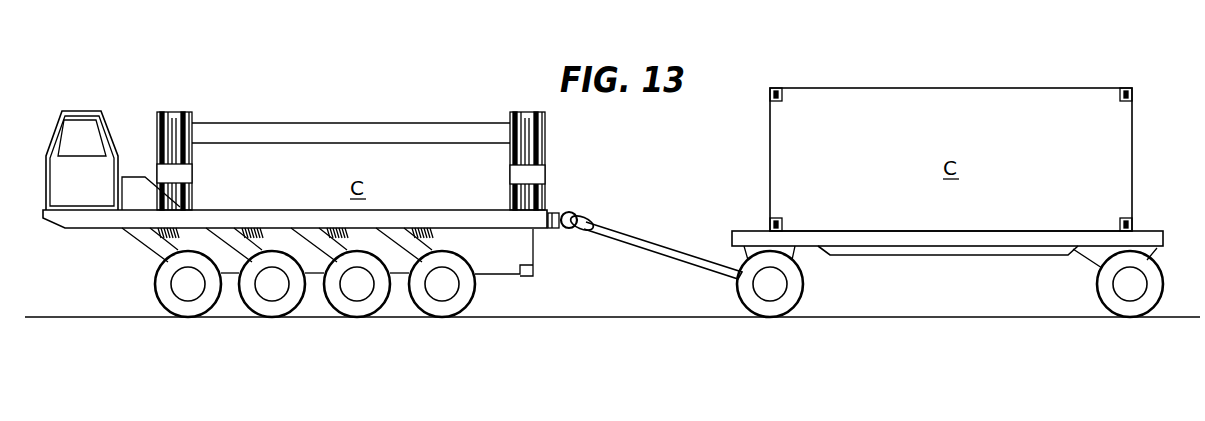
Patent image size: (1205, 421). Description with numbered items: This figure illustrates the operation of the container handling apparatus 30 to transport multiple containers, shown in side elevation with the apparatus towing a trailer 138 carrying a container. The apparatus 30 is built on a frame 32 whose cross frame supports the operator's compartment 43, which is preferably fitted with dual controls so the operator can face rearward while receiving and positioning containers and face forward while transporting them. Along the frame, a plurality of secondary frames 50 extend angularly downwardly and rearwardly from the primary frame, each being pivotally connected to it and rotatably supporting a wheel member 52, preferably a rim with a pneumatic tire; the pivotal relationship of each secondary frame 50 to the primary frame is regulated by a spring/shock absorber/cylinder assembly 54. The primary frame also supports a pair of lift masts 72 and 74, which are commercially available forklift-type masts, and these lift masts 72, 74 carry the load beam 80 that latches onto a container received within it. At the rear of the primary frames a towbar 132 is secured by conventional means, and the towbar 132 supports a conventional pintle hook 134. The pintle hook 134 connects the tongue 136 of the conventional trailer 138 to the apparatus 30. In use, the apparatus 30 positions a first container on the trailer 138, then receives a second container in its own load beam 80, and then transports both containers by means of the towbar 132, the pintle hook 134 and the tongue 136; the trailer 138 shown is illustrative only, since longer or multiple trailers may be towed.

The container handling apparatus 30 is at (82, 88).
The frame 32 is at (77, 234).
The operator's compartment 43 is at (114, 108).
The secondary frame 50 is at (388, 232).
The wheel member 52 is at (258, 302).
The spring/shock absorber/cylinder assembly 54 is at (330, 228).
The lift mast 72 is at (192, 112).
The lift mast 74 is at (508, 113).
The load beam 80 is at (360, 120).
The towbar 132 is at (551, 230).
The pintle hook 134 is at (567, 212).
The tongue 136 is at (655, 238).
The trailer 138 is at (931, 254).